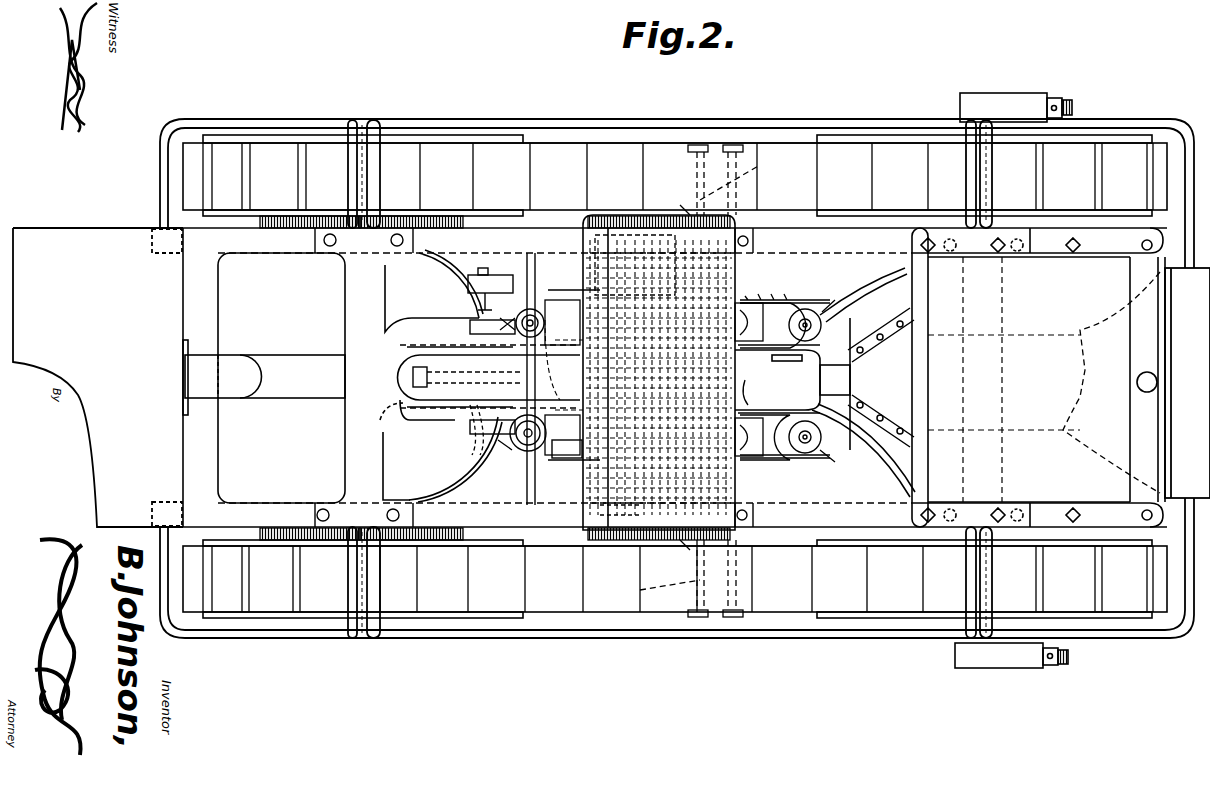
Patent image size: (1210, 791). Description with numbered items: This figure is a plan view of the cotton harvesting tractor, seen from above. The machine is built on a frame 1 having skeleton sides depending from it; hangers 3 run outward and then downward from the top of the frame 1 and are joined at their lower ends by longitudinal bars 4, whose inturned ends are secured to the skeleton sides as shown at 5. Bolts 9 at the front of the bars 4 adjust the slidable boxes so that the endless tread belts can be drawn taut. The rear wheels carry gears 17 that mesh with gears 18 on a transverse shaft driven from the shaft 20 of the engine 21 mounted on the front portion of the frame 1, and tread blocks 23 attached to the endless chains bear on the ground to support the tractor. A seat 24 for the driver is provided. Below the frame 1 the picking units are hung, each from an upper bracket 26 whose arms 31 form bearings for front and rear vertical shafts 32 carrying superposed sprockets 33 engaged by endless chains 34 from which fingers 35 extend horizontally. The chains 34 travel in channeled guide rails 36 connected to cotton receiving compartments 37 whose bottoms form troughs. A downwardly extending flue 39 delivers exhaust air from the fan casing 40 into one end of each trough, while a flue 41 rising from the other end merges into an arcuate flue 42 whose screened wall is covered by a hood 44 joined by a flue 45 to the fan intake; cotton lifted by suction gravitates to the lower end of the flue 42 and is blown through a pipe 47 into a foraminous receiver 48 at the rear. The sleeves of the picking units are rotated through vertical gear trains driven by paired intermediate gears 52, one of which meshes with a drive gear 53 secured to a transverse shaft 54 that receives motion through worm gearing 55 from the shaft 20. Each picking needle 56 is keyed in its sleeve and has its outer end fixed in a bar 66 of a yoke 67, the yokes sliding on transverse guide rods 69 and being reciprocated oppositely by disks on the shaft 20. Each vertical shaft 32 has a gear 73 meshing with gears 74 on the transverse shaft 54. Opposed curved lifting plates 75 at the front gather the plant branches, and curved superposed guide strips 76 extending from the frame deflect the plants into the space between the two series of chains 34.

The frame 1 is at (792, 238).
The hangers 3 is at (374, 132).
The longitudinal bars 4 is at (612, 132).
The secured ends of longitudinal bars 5 is at (166, 181).
The bolts 9 is at (1070, 100).
The gears 17 is at (289, 215).
The gears 18 is at (400, 215).
The engine shaft 20 is at (815, 384).
The engine 21 is at (1038, 377).
The tread blocks 23 is at (515, 152).
The seat 24 is at (653, 240).
The upper bracket 26 is at (748, 252).
The arms 31 is at (555, 300).
The vertical shafts 32 is at (659, 381).
The sprockets 33 is at (866, 318).
The endless chains 34 is at (791, 379).
The fingers 35 is at (867, 358).
The channeled guide rails 36 is at (754, 383).
The cotton receiving compartments 37 is at (749, 379).
The flue 39 is at (808, 310).
The fan casing 40 is at (483, 410).
The flue 41 is at (528, 345).
The flue 42 is at (459, 435).
The hood 44 is at (450, 407).
The flue 45 is at (392, 435).
The pipe 47 is at (240, 356).
The foraminous receiver 48 is at (98, 377).
The intermediate gears 52 is at (600, 215).
The drive gear 53 is at (675, 381).
The transverse shaft 54 is at (630, 516).
The worm gearing 55 is at (640, 372).
The picking needle 56 is at (713, 374).
The bar 66 is at (712, 145).
The yoke 67 is at (742, 148).
The transverse guide rods 69 is at (661, 378).
The gear 73 is at (472, 325).
The gears 74 is at (530, 300).
The curved lifting plates 75 is at (1111, 382).
The guide strips 76 is at (423, 258).